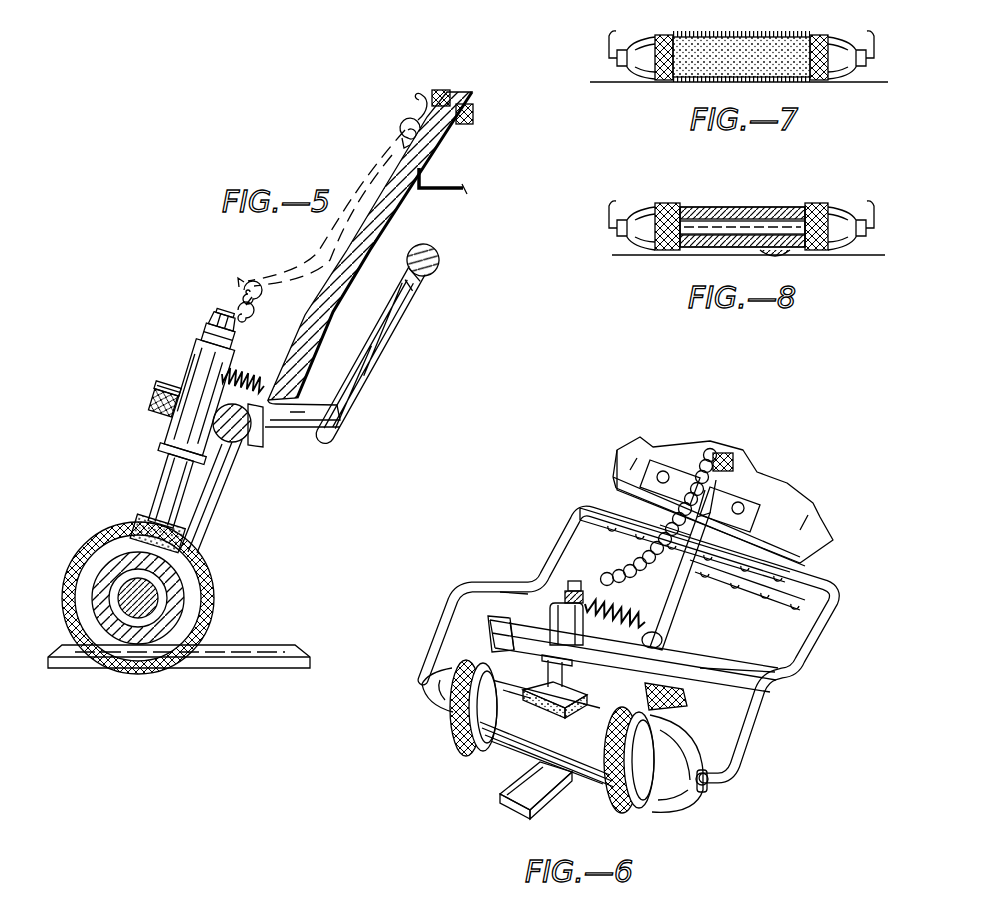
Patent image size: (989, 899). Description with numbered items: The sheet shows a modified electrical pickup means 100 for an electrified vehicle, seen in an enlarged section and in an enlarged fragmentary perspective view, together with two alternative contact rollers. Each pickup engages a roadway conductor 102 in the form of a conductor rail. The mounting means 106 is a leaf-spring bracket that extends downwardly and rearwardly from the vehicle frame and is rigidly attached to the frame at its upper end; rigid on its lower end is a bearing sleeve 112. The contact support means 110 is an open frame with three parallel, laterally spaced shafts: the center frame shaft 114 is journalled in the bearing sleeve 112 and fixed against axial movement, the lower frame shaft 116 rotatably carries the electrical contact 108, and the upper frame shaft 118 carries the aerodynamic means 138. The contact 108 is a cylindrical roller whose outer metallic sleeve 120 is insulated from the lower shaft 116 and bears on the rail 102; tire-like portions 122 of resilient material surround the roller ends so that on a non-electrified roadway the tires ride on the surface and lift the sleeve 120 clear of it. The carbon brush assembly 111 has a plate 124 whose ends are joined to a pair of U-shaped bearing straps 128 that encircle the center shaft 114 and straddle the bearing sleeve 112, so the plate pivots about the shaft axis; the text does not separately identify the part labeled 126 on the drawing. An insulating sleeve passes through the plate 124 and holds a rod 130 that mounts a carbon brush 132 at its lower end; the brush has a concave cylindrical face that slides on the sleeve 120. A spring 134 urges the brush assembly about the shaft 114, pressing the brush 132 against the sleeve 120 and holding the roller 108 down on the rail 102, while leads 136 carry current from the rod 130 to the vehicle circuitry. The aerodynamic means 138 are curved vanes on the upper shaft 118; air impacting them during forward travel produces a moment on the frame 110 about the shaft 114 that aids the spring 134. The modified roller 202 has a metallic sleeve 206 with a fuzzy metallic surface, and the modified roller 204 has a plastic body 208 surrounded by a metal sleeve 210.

In FIG. 5, the electrical pickup means 100 is at (376, 150).
In FIG. 5, the roadway conductors 102 is at (275, 646).
In FIG. 6, the roadway conductors 102 is at (520, 794).
In FIG. 5, the mounting means 106 is at (400, 203).
In FIG. 6, the mounting means 106 is at (672, 617).
In FIG. 5, the electrical contact 108 is at (113, 552).
In FIG. 6, the electrical contact 108 is at (508, 760).
In FIG. 6, the contact support means 110 is at (554, 528).
In FIG. 5, the carbon brush assembly 111 is at (188, 334).
In FIG. 6, the carbon brush assembly 111 is at (570, 588).
In FIG. 5, the bearing sleeve 112 is at (216, 455).
In FIG. 6, the bearing sleeve 112 is at (656, 636).
In FIG. 5, the center frame shaft 114 is at (251, 448).
In FIG. 6, the center frame shaft 114 is at (778, 672).
In FIG. 5, the lower frame shaft 116 is at (152, 598).
In FIG. 6, the upper frame shaft 118 is at (593, 503).
In FIG. 6, the outer metallic sleeve 120 is at (593, 780).
In FIG. 5, the tire-like portions 122 is at (92, 625).
In FIG. 6, the tire-like portions 122 is at (465, 750).
In FIG. 5, the plate 124 is at (178, 388).
In FIG. 6, the plate 124 is at (492, 647).
In FIG. 5, the nut 126 is at (156, 408).
In FIG. 6, the nut 126 is at (488, 620).
In FIG. 5, the bearing straps 128 is at (168, 441).
In FIG. 6, the bearing straps 128 is at (500, 592).
In FIG. 5, the rod 130 is at (212, 322).
In FIG. 6, the rod 130 is at (558, 590).
In FIG. 5, the carbon brush 132 is at (165, 556).
In FIG. 6, the carbon brush 132 is at (472, 747).
In FIG. 5, the spring 134 is at (242, 375).
In FIG. 6, the spring 134 is at (650, 602).
In FIG. 5, the leads 136 is at (404, 104).
In FIG. 5, the aerodynamic means 138 is at (370, 340).
In FIG. 6, the aerodynamic means 138 is at (768, 612).
In FIG. 7, the modified contact roller 202 is at (748, 26).
In FIG. 8, the modified contact roller 204 is at (771, 204).
In FIG. 7, the metallic sleeve 206 is at (700, 62).
In FIG. 8, the plastic body 208 is at (700, 240).
In FIG. 8, the metal sleeve 210 is at (722, 206).